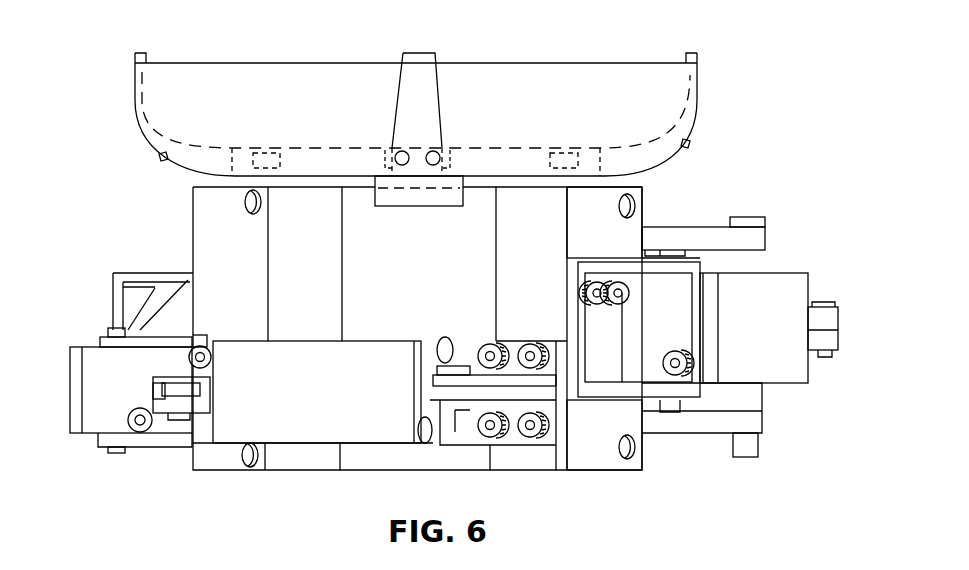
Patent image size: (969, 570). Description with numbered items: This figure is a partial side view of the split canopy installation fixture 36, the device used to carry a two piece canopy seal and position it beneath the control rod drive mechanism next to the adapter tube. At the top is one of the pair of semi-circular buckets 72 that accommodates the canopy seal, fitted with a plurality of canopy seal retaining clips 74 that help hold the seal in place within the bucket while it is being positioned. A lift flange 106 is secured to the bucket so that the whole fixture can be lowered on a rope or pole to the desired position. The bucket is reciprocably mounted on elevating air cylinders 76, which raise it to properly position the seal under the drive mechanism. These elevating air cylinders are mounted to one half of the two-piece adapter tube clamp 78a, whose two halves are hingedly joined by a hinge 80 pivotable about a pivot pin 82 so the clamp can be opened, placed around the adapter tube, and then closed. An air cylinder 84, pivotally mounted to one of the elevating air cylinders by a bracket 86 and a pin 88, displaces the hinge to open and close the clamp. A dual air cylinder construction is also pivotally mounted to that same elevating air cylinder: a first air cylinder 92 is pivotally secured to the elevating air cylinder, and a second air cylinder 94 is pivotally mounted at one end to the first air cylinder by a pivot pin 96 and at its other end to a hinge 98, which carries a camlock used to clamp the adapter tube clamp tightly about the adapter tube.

The split canopy installation fixture 36 is at (465, 98).
The semi-circular bucket 72 is at (554, 63).
The canopy seal retaining clips 74 is at (146, 53).
The elevating air cylinders 76 is at (216, 210).
The two-piece adapter tube clamp 78a is at (443, 280).
The hinge 80 is at (753, 240).
The pivot pin 82 is at (750, 218).
The air cylinder 84 is at (792, 362).
The bracket 86 is at (702, 261).
The pin 88 is at (670, 412).
The first air cylinder 92 is at (315, 420).
The second air cylinder 94 is at (93, 420).
The pivot pin 96 is at (200, 420).
The hinge 98 is at (115, 273).
The lift flanges 106 is at (410, 207).